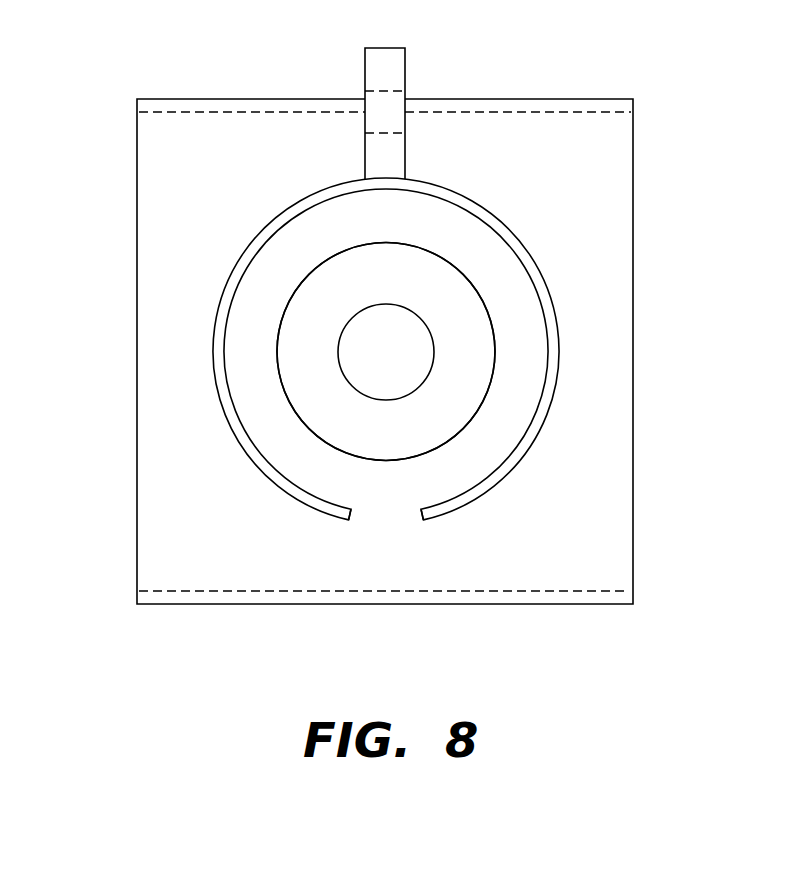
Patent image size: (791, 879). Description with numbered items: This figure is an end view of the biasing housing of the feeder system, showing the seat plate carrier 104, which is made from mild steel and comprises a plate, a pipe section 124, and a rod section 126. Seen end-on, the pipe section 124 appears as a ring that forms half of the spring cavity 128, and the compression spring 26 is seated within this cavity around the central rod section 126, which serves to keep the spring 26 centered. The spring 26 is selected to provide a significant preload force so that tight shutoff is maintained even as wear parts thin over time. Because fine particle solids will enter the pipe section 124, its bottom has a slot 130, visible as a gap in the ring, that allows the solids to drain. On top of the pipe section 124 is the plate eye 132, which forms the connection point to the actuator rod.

The seat plate carrier 104 is at (608, 523).
The plate eye 132 is at (398, 72).
The pipe section 124 is at (548, 434).
The spring cavity 128 is at (506, 271).
The spring 26 is at (488, 323).
The rod section 126 is at (435, 341).
The slot 130 is at (401, 523).